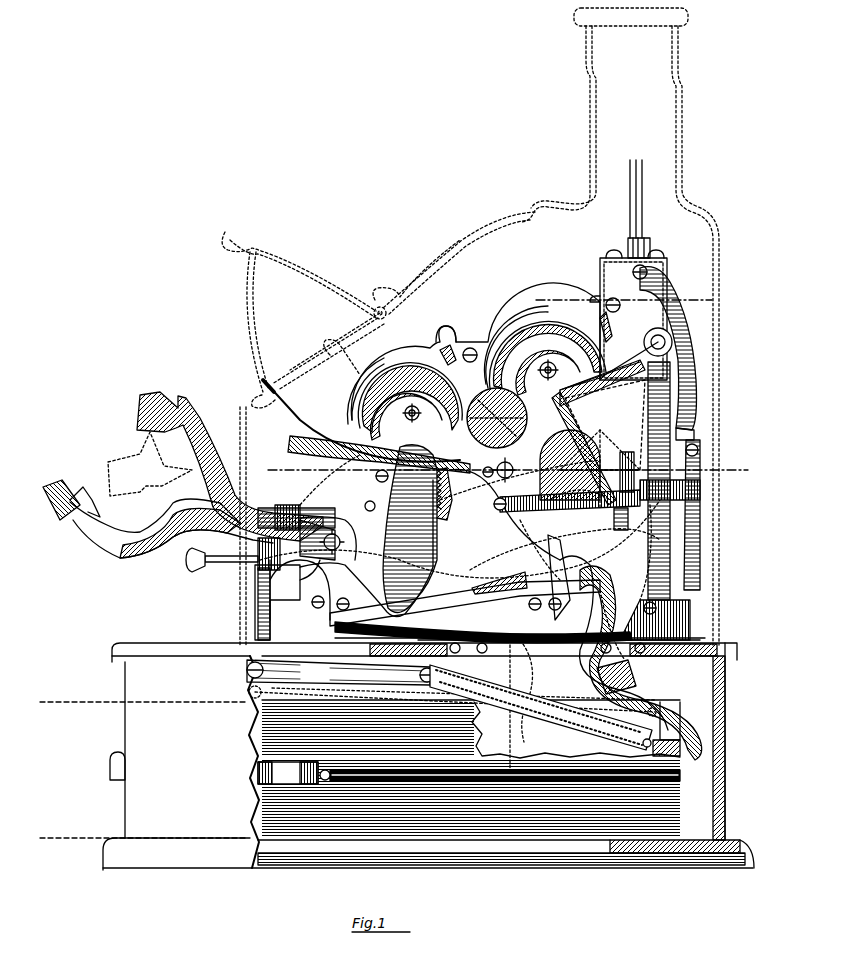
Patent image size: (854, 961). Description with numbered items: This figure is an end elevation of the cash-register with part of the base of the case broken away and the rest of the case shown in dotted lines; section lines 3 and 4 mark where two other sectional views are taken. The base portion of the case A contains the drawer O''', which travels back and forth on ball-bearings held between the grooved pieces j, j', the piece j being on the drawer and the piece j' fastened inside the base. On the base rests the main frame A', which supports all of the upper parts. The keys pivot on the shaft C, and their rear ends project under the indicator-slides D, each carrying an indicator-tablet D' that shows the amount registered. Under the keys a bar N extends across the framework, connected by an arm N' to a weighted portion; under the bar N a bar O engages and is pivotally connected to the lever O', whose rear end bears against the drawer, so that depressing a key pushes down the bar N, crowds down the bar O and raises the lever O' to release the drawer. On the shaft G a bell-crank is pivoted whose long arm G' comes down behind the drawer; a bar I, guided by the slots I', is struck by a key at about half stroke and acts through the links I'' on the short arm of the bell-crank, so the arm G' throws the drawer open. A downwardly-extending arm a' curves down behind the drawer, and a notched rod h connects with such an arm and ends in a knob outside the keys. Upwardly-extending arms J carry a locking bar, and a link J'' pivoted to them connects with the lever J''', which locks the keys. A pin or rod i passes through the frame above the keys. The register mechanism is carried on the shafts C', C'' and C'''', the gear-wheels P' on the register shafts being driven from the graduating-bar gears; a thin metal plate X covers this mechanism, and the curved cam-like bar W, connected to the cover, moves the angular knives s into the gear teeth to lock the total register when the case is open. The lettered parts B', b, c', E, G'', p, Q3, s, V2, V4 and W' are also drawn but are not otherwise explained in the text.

The base portion of the case A is at (428, 748).
The main frame A' is at (415, 544).
The downwardly-extending arm a' is at (631, 656).
The plate B' is at (483, 633).
The bottom plate b is at (450, 620).
The shaft C is at (463, 438).
The shaft C' is at (512, 464).
The shaft C'' is at (426, 417).
The shaft C'''' is at (535, 381).
The bracket c' is at (520, 330).
The indicator-slide D is at (644, 244).
The indicator-tablet D' is at (646, 199).
The head block E is at (668, 258).
The shaft G is at (632, 348).
The arm of bell-crank lever G' is at (693, 435).
The link G'' is at (602, 415).
The rod h is at (228, 566).
The bar I is at (617, 498).
The slots I' is at (597, 492).
The links I'' is at (580, 448).
The pin or rod i is at (364, 506).
The upwardly-extending arms J is at (678, 481).
The link J'' is at (609, 517).
The lever J''' is at (379, 454).
The grooved piece j is at (504, 772).
The grooved piece j' is at (288, 773).
The bar N is at (296, 532).
The arm N' is at (287, 512).
The bar O is at (277, 602).
The lever O' is at (340, 679).
The drawer O''' is at (555, 710).
The gear-wheels P' is at (439, 365).
The rack p is at (442, 490).
The arm Q3 is at (693, 305).
The angular knives s is at (410, 529).
The gear sector V2 is at (528, 318).
The gear sector V4 is at (368, 380).
The curved rod or bar W is at (251, 469).
The handle phantom W' is at (335, 341).
The thin metal plate X is at (446, 340).
The section line 3- 3 is at (540, 280).
The section line 4- 4 is at (275, 450).